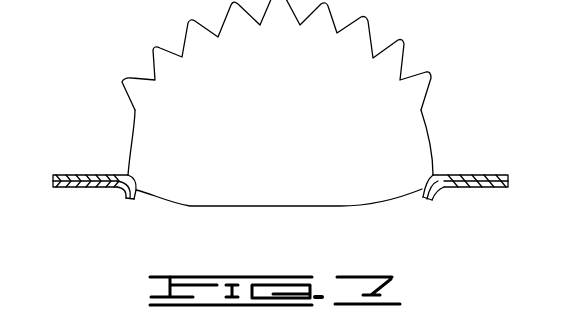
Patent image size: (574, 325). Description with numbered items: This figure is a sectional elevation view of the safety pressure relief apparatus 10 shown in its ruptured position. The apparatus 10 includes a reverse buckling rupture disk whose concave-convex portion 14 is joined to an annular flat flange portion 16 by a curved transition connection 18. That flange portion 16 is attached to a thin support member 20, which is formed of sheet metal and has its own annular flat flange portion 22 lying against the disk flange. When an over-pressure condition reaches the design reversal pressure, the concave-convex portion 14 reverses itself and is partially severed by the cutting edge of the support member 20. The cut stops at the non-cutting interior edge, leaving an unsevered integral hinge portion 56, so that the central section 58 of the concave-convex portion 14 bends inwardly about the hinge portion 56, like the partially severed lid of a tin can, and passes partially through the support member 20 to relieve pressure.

The safety pressure relief apparatus 10 is at (484, 107).
The concave-convex portion 14 is at (340, 53).
The annular flat flange portion 16 is at (58, 190).
The curved transition connection 18 is at (113, 192).
The support member 20 is at (63, 170).
The annular flat flange portion 22 is at (78, 175).
The integral hinge portion 56 is at (337, 205).
The central section 58 is at (253, 108).